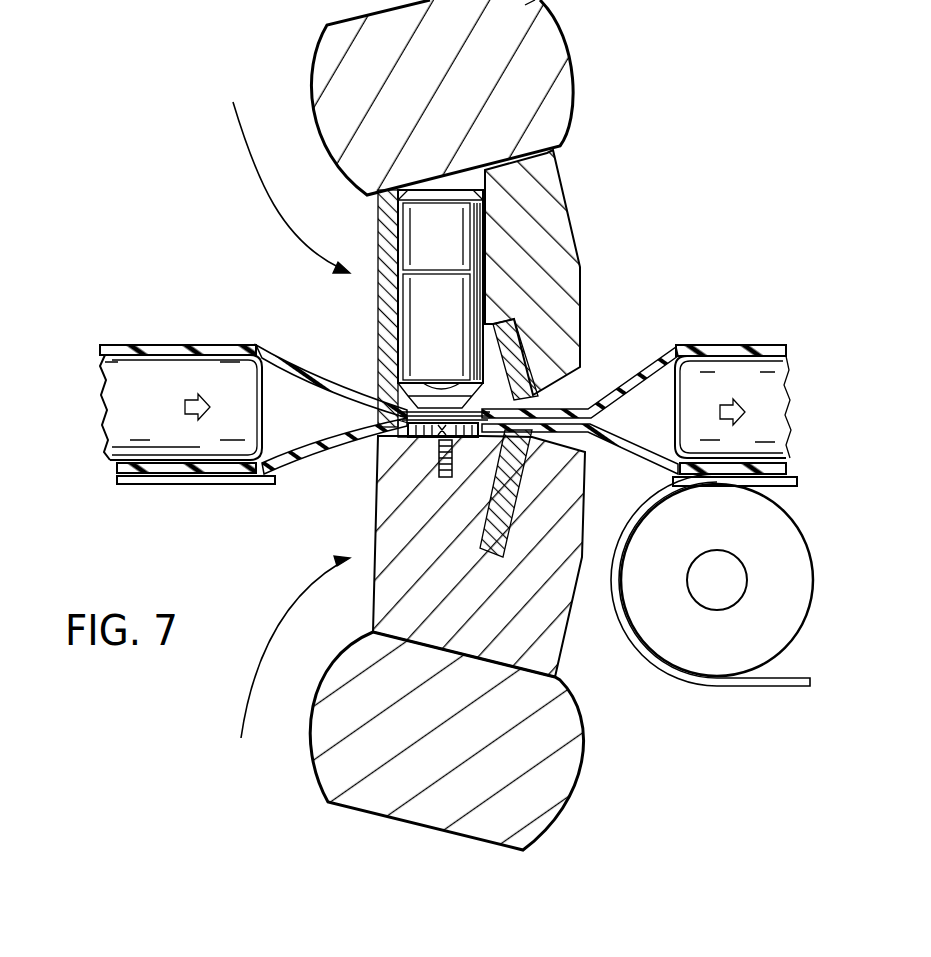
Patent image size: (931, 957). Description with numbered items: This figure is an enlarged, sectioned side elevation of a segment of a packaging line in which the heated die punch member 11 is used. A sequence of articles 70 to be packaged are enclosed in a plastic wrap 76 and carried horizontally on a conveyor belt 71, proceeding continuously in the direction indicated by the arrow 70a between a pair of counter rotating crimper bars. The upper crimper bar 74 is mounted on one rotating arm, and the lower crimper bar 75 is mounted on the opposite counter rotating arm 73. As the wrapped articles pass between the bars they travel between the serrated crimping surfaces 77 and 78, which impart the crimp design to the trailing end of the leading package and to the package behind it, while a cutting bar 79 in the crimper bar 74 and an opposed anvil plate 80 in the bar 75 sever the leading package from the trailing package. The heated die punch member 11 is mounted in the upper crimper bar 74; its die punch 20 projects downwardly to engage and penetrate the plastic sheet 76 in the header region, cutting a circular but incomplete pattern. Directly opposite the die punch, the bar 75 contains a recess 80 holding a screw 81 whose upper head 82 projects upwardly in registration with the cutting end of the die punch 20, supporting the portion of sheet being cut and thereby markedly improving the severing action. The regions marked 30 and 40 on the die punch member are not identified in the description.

The heated die punch member 11 is at (402, 286).
The die punch 20 is at (405, 410).
The lower cartridge section 30 is at (455, 325).
The upper cartridge section 40 is at (445, 245).
The articles 70 is at (187, 404).
The arrow 70a is at (200, 395).
The conveyor belt 71 is at (185, 482).
The counter rotating arm 73 is at (558, 742).
The crimper bar 74 is at (545, 213).
The crimper bar 75 is at (408, 595).
The plastic wrap 76 is at (185, 345).
The crimping surface 77 is at (568, 392).
The crimping surface 78 is at (537, 432).
The cutting bar 79 is at (527, 365).
The anvil plate 80 is at (408, 432).
The screw 81 is at (440, 458).
The upper head 82 is at (404, 440).